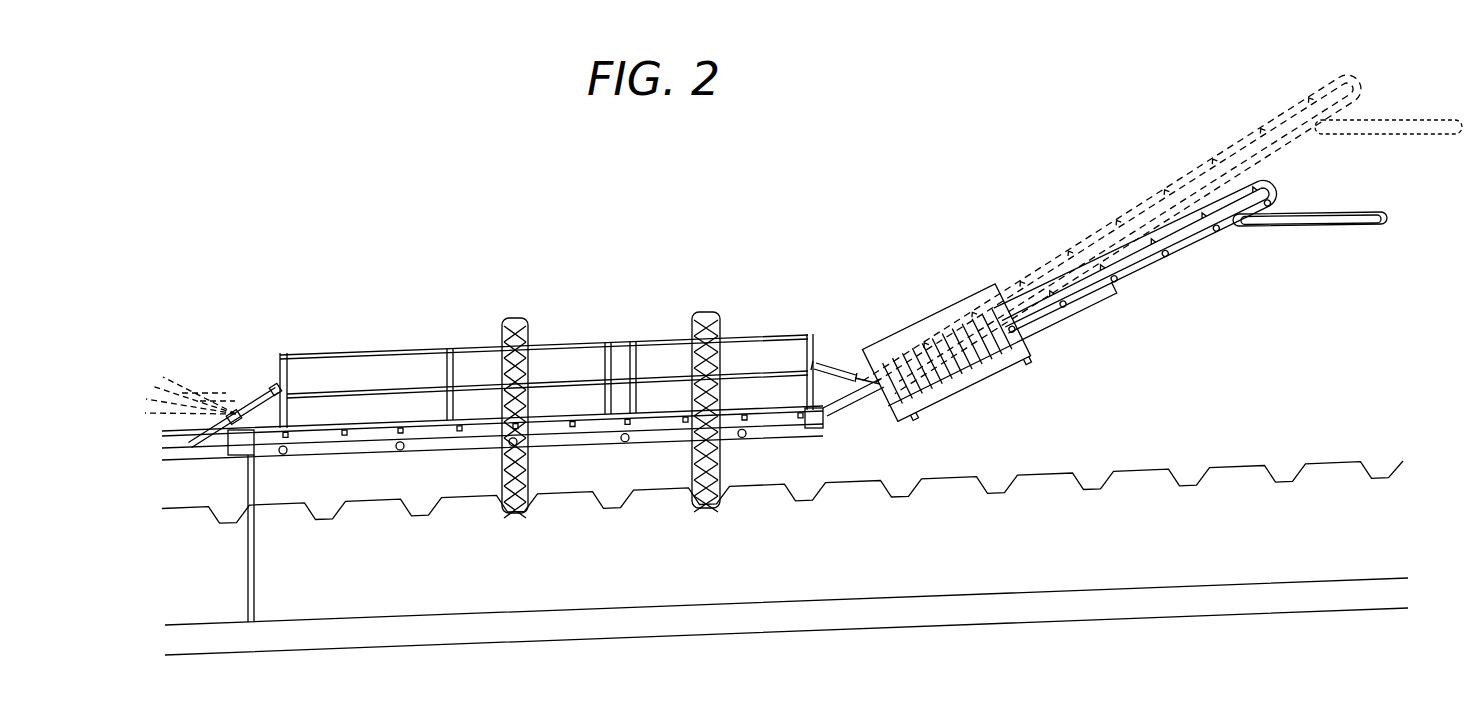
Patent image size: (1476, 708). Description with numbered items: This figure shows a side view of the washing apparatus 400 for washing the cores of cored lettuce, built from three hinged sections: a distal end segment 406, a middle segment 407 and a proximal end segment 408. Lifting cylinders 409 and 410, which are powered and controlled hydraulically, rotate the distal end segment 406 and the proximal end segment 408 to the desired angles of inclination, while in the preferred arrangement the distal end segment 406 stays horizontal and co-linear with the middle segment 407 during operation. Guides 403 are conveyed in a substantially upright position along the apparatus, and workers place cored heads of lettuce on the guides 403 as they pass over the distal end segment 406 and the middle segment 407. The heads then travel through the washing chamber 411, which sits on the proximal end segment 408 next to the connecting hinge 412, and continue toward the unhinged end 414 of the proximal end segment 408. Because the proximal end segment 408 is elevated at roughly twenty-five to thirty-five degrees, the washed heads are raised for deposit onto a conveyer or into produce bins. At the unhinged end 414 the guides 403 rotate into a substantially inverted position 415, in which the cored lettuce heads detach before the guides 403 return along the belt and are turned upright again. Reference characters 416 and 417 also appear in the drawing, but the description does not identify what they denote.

The washing apparatus 400 is at (430, 333).
The guides 403 is at (1212, 188).
The distal end segment 406 is at (180, 482).
The middle segment 407 is at (587, 460).
The proximal end segment 408 is at (1140, 298).
The lifting cylinder 409 is at (222, 382).
The lifting cylinder 410 is at (840, 352).
The washing chamber 411 is at (918, 322).
The connecting hinge 412 is at (841, 452).
The unhinged end 414 is at (1288, 185).
The inverted position 415 is at (1233, 230).
The deflector plate 416 is at (1320, 208).
The support stand 417 is at (254, 457).